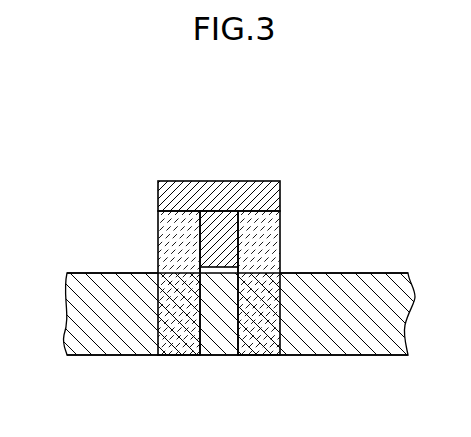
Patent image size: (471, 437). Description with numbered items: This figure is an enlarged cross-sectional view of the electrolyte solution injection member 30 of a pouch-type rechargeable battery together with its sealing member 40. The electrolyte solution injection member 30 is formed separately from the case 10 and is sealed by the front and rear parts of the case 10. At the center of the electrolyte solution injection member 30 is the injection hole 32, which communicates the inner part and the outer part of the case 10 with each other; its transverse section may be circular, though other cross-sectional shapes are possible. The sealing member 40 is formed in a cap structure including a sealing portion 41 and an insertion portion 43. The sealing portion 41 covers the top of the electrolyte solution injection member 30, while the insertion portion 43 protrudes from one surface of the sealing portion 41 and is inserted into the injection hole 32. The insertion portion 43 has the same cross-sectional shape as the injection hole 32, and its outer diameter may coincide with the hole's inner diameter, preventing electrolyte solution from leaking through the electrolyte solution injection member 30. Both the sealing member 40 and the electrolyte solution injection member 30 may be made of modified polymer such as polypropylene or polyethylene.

The case 10 is at (348, 333).
The electrolyte solution injection member 30 is at (168, 245).
The injection hole 32 is at (217, 338).
The sealing member 40 is at (217, 183).
The sealing portion 41 is at (183, 190).
The insertion portion 43 is at (217, 247).